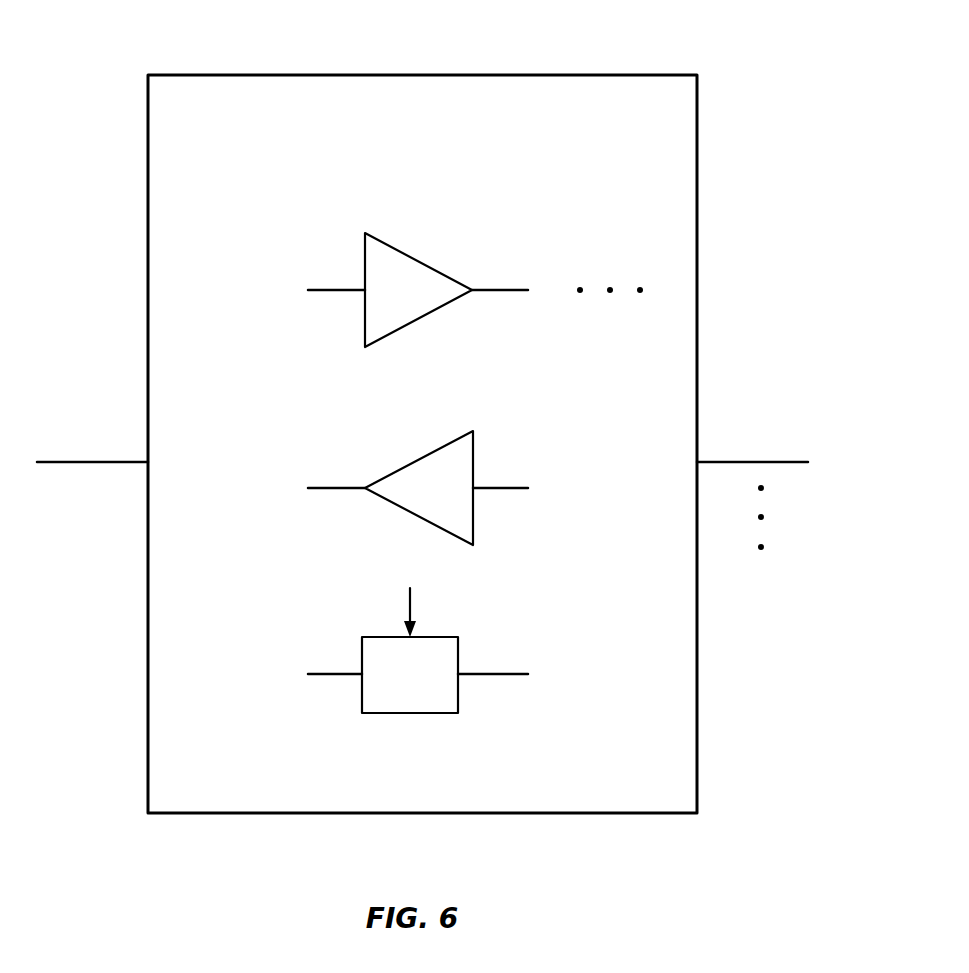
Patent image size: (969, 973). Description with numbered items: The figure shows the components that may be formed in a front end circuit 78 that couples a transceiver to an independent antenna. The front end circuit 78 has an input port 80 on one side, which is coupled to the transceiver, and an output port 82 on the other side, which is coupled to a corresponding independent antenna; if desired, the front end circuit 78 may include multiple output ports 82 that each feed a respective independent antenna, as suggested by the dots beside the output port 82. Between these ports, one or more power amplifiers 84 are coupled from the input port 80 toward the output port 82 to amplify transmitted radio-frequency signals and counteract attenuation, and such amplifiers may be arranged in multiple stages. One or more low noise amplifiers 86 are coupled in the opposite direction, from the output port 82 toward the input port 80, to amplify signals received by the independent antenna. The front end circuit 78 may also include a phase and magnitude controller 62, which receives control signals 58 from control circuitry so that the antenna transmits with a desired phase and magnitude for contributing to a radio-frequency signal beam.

The front end circuit 78 is at (533, 75).
The power amplifier 84 is at (471, 252).
The low noise amplifier 86 is at (473, 410).
The phase and magnitude controller 62 is at (459, 654).
The control signals 58 is at (410, 607).
The input port 80 is at (121, 436).
The output port 82 is at (722, 433).